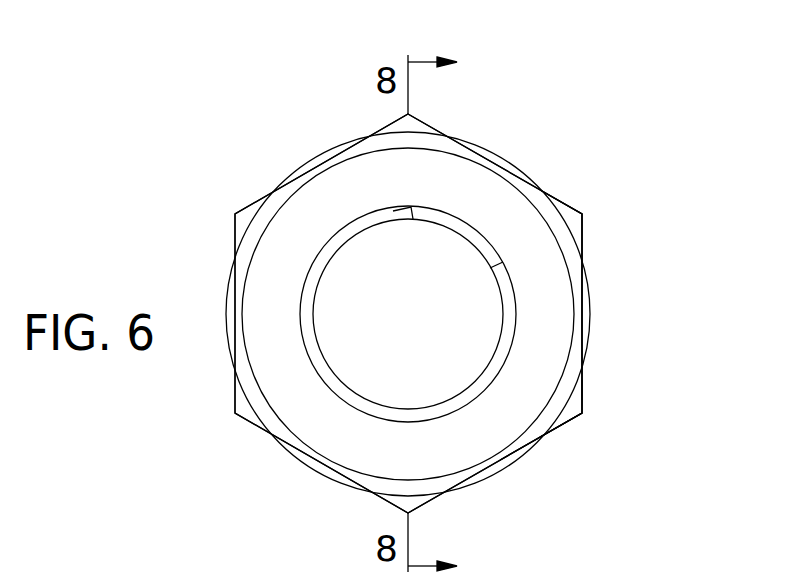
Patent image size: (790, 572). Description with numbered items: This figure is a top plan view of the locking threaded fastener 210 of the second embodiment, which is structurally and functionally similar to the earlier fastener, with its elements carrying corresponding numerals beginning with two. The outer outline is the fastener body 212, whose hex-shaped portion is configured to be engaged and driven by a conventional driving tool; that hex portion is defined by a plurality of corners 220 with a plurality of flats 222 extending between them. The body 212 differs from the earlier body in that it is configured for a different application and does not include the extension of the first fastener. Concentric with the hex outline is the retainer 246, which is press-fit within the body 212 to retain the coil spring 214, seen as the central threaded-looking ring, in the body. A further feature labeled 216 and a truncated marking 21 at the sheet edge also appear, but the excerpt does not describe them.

The locking threaded fastener 210 is at (590, 74).
The fastener body 212 is at (255, 430).
The coil spring 214 is at (340, 356).
The flange 216 is at (595, 318).
The corners 220 is at (584, 212).
The flats 222 is at (583, 390).
The retainer 246 is at (550, 265).
The partial numeral 21 is at (775, 561).